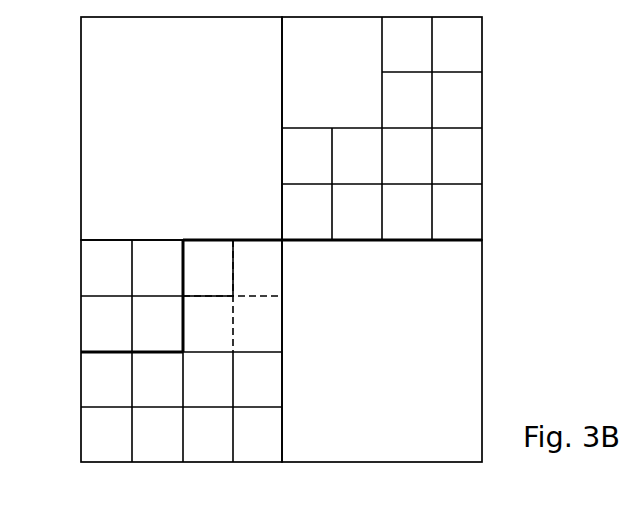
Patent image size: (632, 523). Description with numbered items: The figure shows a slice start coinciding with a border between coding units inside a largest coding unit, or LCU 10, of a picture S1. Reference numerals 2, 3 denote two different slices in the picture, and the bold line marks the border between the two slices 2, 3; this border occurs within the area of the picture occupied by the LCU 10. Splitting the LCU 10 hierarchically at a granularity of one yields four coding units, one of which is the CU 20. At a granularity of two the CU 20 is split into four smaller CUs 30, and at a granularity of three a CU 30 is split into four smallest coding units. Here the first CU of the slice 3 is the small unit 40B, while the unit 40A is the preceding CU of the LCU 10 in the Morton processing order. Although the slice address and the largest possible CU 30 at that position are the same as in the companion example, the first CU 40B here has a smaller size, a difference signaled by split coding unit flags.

The sheet S1 is at (618, 20).
The LCU 10 is at (81, 242).
The CU 20 is at (81, 133).
The slice 2 is at (483, 128).
The slice 3 is at (483, 352).
The CU 30 is at (283, 296).
The preceding CU 40A is at (179, 337).
The first CU 40B is at (227, 282).